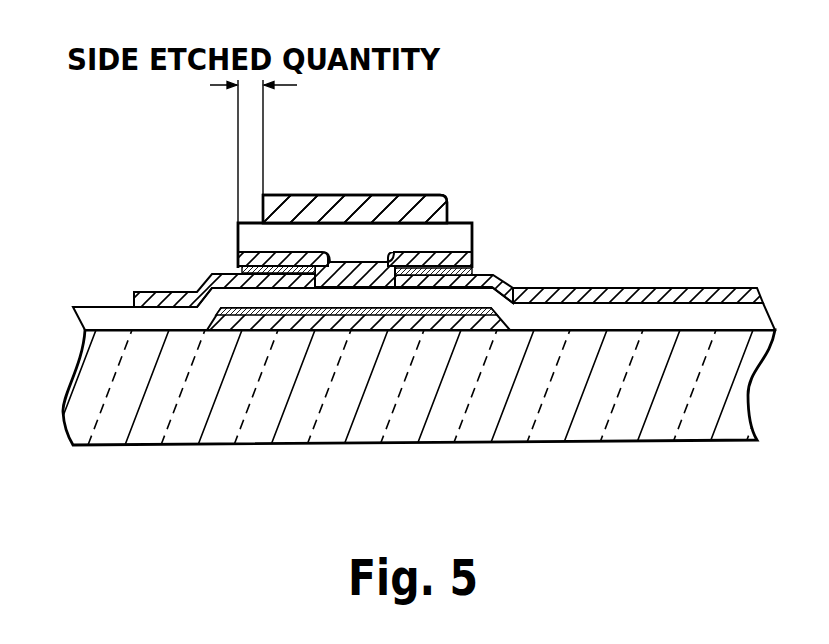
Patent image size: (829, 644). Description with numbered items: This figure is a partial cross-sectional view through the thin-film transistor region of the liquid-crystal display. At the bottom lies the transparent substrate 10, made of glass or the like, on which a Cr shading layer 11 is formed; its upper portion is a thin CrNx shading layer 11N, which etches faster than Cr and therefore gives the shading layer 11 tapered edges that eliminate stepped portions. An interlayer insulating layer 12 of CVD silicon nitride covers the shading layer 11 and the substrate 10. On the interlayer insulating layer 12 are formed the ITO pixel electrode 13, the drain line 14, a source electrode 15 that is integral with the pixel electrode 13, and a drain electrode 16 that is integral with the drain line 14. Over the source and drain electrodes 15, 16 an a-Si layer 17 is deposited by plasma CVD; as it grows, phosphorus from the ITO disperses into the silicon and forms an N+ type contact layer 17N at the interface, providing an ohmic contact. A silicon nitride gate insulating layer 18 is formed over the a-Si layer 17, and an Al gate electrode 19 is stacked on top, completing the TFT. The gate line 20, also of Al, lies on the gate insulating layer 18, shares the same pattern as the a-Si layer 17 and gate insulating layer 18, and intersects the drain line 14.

The transparent substrate 10 is at (698, 412).
The shading layer 11 is at (372, 318).
The CrNx shading layer 11N is at (278, 312).
The interlayer insulating layer 12 is at (729, 318).
The pixel electrode 13 is at (628, 288).
The drain line 14 is at (136, 292).
The source electrode 15 is at (474, 256).
The drain electrode 16 is at (236, 275).
The a-Si layer 17 is at (391, 262).
The N+ type contact layer 17N is at (245, 266).
The gate insulating layer 18 is at (357, 245).
The gate electrode 19 is at (310, 210).
The gate line 20 is at (355, 209).